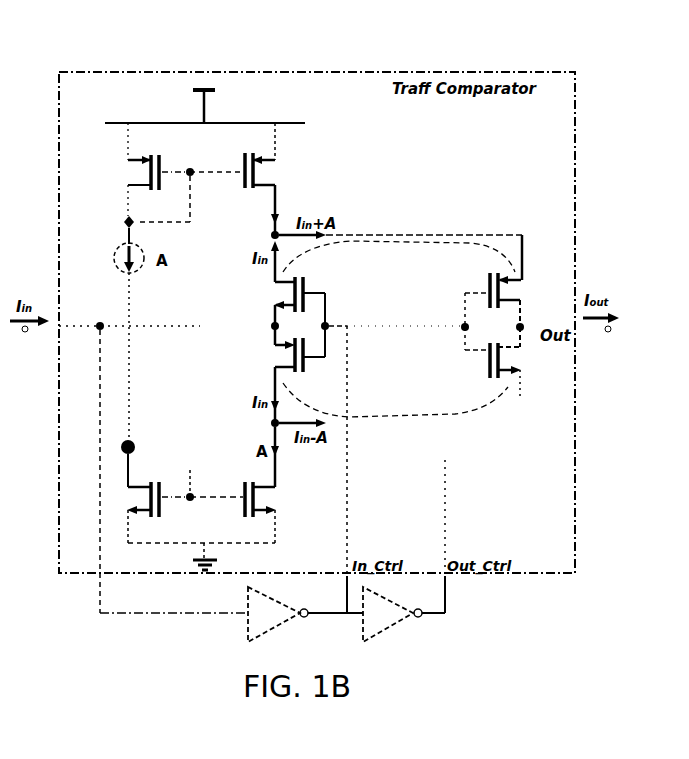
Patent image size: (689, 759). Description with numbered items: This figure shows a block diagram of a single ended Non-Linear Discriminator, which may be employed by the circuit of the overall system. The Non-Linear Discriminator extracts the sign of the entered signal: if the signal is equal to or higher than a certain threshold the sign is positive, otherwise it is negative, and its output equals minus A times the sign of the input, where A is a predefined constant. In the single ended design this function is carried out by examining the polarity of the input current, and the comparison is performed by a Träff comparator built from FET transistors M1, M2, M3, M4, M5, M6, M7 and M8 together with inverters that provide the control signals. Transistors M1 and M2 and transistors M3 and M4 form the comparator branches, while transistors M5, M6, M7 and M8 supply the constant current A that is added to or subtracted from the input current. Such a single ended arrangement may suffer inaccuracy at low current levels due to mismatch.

The NMOS transistor M1 is at (288, 380).
The PMOS transistor M2 is at (288, 317).
The NMOS transistor M3 is at (513, 363).
The PMOS transistor M4 is at (512, 300).
The NMOS transistor M5 is at (246, 512).
The PMOS transistor M6 is at (266, 179).
The PMOS transistor M7 is at (148, 512).
The PMOS transistor M8 is at (149, 169).